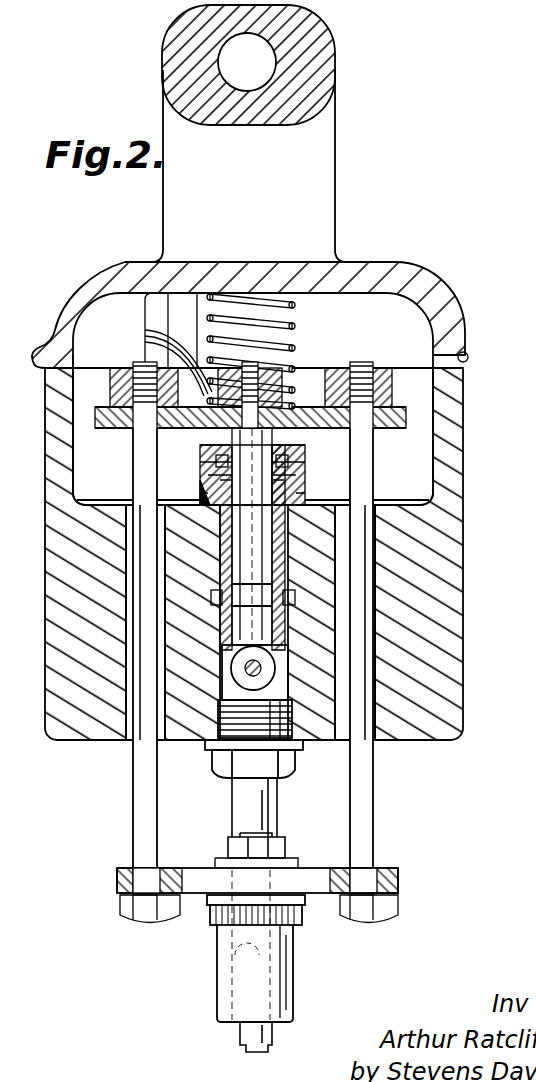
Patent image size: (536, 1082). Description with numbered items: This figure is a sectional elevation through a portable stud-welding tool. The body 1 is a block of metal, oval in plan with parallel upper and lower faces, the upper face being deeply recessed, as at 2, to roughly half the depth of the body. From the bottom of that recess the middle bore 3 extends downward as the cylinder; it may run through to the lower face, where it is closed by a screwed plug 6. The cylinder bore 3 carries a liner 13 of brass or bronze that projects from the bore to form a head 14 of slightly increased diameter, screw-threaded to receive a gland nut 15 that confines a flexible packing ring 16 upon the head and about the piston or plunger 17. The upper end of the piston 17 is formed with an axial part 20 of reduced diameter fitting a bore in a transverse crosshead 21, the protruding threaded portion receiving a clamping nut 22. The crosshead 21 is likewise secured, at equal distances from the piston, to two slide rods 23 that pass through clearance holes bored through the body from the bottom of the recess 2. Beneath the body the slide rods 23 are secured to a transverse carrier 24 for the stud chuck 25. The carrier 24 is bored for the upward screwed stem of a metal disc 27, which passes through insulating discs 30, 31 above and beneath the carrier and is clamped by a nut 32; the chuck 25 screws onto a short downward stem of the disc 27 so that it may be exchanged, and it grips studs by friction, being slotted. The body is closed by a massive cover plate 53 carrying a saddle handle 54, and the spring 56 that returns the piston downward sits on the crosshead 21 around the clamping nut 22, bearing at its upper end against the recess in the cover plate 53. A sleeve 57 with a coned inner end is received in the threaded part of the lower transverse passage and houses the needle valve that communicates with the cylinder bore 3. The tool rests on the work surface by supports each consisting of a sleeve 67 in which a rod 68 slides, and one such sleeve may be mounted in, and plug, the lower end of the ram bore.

The body 1 is at (455, 620).
The recess 2 is at (435, 475).
The middle bore 3 is at (285, 565).
The screwed plug 6 is at (290, 770).
The liner 13 is at (292, 582).
The head 14 is at (305, 488).
The gland nut 15 is at (300, 458).
The flexible packing ring 16 is at (300, 468).
The piston or plunger 17 is at (245, 530).
The axial part of reduced diameter 20 is at (205, 368).
The transverse crosshead 21 is at (410, 416).
The clamping nut 22 is at (287, 377).
The slide rods 23 is at (135, 762).
The transverse carrier 24 is at (398, 878).
The stud chuck 25 is at (295, 997).
The metal disc 27 is at (215, 915).
The insulating disc 30 is at (280, 876).
The insulating disc 31 is at (300, 898).
The nut 32 is at (232, 850).
The cover plate 53 is at (422, 292).
The saddle handle 54 is at (327, 55).
The spring 56 is at (300, 320).
The sleeve 57 is at (250, 665).
The sleeve 67 is at (283, 812).
The rod 68 is at (272, 1034).